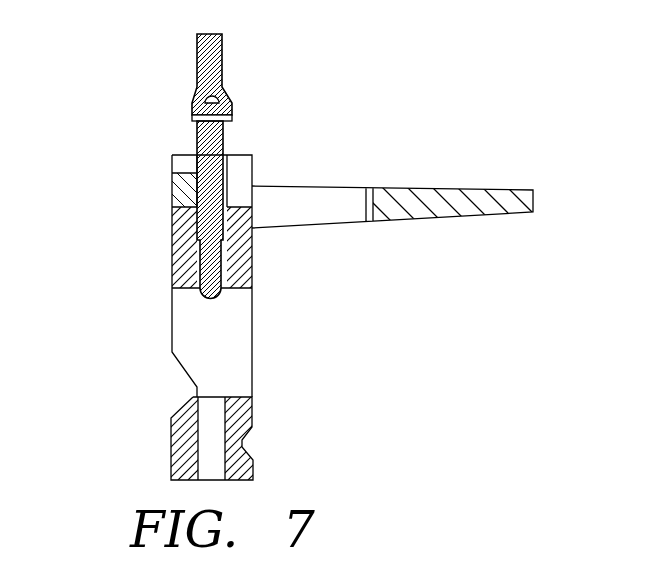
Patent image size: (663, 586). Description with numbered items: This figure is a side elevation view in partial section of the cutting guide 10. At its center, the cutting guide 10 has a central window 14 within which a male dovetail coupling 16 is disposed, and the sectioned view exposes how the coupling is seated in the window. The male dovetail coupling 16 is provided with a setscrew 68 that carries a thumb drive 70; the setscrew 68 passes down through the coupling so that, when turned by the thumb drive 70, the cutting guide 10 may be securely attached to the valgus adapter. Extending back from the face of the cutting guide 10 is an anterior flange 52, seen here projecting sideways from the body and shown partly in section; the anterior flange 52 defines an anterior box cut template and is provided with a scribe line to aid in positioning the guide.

The cutting guide 10 is at (368, 130).
The central window 14 is at (226, 327).
The male dovetail coupling 16 is at (171, 244).
The anterior flange 52 is at (403, 187).
The setscrew 68 is at (227, 207).
The thumb drive 70 is at (222, 48).